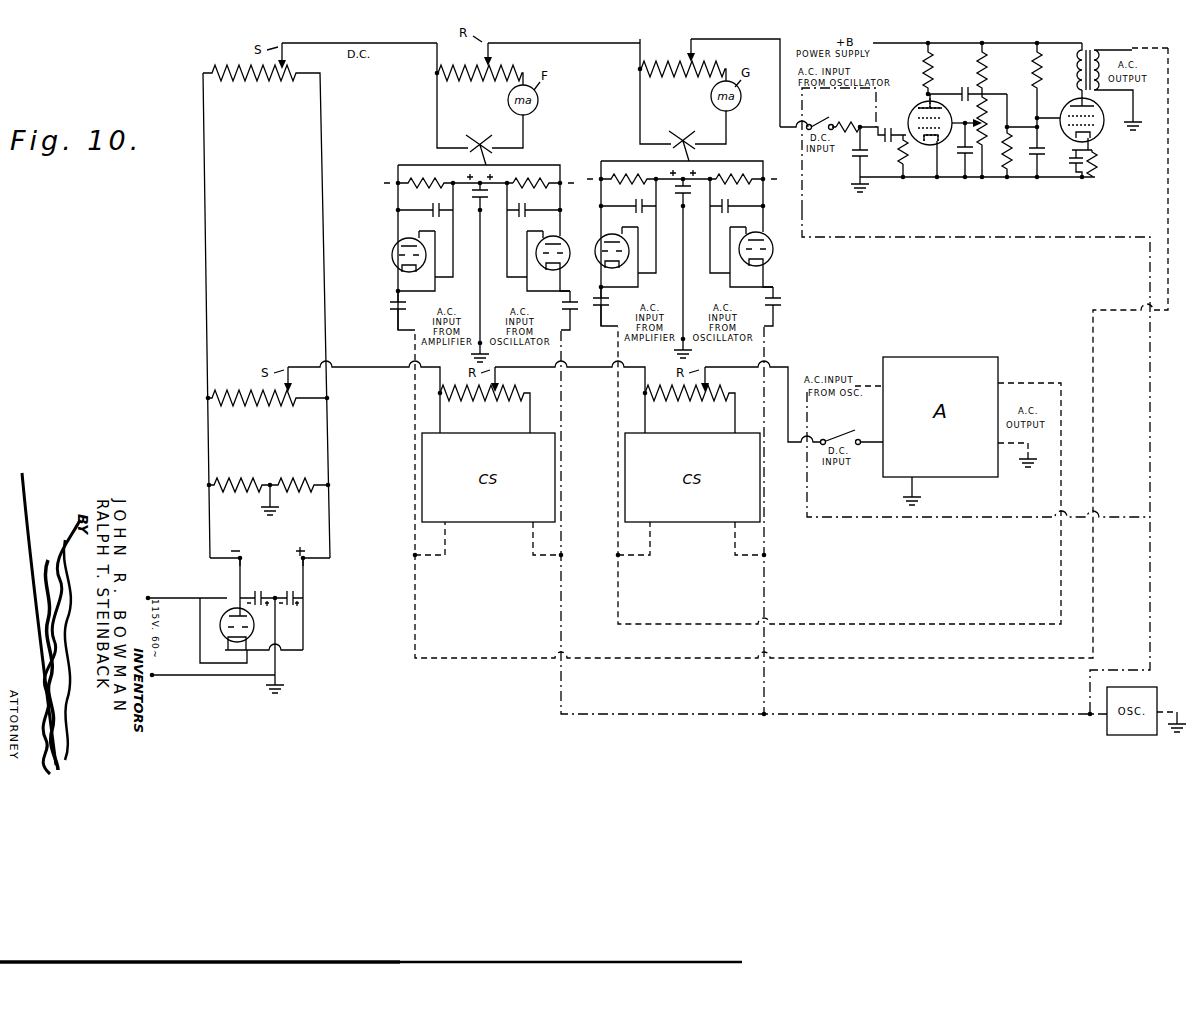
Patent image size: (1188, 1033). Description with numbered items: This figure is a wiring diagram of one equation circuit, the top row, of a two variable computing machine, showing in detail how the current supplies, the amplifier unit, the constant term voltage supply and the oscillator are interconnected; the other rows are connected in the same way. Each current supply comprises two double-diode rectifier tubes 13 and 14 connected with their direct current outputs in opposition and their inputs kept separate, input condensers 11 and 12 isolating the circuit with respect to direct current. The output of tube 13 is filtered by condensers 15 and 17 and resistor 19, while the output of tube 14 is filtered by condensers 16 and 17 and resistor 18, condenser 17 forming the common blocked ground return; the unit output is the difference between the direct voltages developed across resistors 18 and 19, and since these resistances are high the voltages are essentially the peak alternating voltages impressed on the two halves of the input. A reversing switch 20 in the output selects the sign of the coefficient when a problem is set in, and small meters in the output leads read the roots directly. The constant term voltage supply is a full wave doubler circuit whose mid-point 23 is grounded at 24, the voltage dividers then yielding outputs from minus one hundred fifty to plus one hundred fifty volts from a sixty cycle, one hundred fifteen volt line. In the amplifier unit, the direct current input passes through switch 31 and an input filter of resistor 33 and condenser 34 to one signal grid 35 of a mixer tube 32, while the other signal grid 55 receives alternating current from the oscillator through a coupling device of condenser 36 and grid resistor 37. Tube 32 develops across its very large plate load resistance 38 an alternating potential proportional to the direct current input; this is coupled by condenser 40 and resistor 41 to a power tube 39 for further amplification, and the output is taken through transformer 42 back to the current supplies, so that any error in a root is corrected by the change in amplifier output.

The input condenser 11 is at (405, 306).
The input condenser 12 is at (563, 306).
The rectifier tube 13 is at (392, 247).
The rectifier tube 14 is at (564, 242).
The condenser 15 is at (428, 205).
The condenser 16 is at (529, 205).
The condenser 17 is at (472, 198).
The resistor 18 is at (540, 180).
The resistor 19 is at (432, 180).
The reversing switch 20 is at (489, 153).
The mid-point 23 is at (263, 596).
The ground 24 is at (286, 679).
The switch 31 is at (850, 436).
The mixer tube 32 is at (916, 112).
The resistor 33 is at (848, 124).
The condenser 34 is at (850, 154).
The signal grid 35 is at (884, 128).
The condenser 36 is at (898, 146).
The grid resistor 37 is at (904, 162).
The load resistance 38 is at (926, 74).
The power tube 39 is at (1068, 106).
The condenser 40 is at (965, 88).
The resistor 41 is at (1008, 142).
The transformer 42 is at (1078, 62).
The signal grid 55 is at (938, 156).